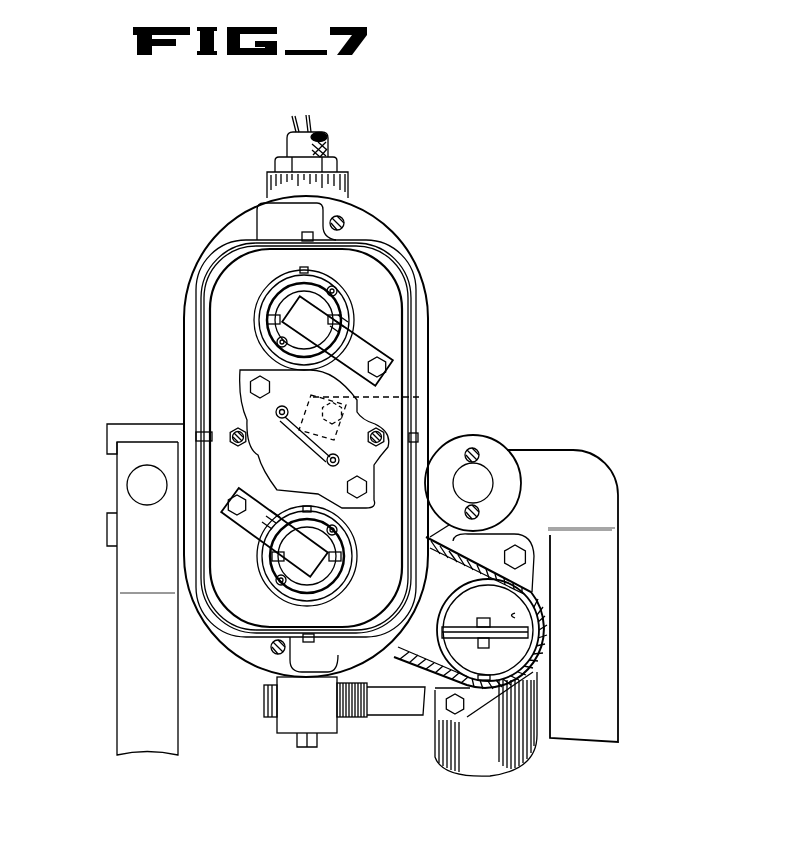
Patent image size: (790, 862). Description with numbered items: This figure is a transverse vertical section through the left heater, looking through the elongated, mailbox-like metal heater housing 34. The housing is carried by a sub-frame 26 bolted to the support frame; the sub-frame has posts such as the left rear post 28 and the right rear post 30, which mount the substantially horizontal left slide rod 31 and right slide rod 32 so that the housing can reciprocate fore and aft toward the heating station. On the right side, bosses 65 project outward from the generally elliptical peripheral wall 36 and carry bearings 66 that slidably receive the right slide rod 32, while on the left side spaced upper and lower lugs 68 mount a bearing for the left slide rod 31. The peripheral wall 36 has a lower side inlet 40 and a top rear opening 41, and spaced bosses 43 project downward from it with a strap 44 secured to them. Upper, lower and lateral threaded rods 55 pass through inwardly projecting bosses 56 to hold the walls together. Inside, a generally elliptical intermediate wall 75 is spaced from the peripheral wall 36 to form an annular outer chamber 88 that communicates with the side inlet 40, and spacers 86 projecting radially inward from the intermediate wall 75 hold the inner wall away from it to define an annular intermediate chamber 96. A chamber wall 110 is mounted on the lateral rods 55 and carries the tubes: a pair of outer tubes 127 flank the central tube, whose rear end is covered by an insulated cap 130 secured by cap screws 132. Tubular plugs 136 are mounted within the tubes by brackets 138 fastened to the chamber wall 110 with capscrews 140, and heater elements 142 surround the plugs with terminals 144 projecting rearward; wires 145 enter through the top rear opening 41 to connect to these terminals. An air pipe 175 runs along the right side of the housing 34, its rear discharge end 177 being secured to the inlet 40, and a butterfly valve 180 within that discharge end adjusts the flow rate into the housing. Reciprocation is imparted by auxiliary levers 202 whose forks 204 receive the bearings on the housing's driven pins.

The sub-frame 26 is at (618, 644).
The left rear post 28 is at (125, 553).
The right rear post 30 is at (608, 483).
The left slide rod 31 is at (134, 488).
The right slide rod 32 is at (478, 475).
The heater housing 34 is at (414, 247).
The peripheral wall 36 is at (418, 262).
The lower side inlet 40 is at (412, 613).
The top rear opening 41 is at (289, 156).
The bosses 43 is at (316, 709).
The strap 44 is at (338, 728).
The threaded rods 55 is at (236, 440).
The inwardly projecting bosses 56 is at (346, 220).
The bosses 65 is at (480, 438).
The bearings 66 is at (505, 478).
The lugs 68 is at (115, 424).
The intermediate wall 75 is at (260, 218).
The spacers 86 is at (302, 237).
The outer chamber 88 is at (196, 320).
The intermediate chamber 96 is at (228, 268).
The chamber wall 110 is at (232, 296).
The outer tubes 127 is at (252, 305).
The insulated cap 130 is at (314, 439).
The cap screws 132 is at (250, 385).
The tubular plugs 136 is at (275, 345).
The brackets 138 is at (372, 334).
The capscrews 140 is at (388, 368).
The heater elements 142 is at (348, 305).
The terminals 144 is at (336, 292).
The wires 145 is at (312, 127).
The air pipe 175 is at (478, 776).
The rear discharge end 177 is at (515, 614).
The butterfly valve 180 is at (500, 634).
The auxiliary levers 202 is at (412, 716).
The forks 204 is at (270, 718).